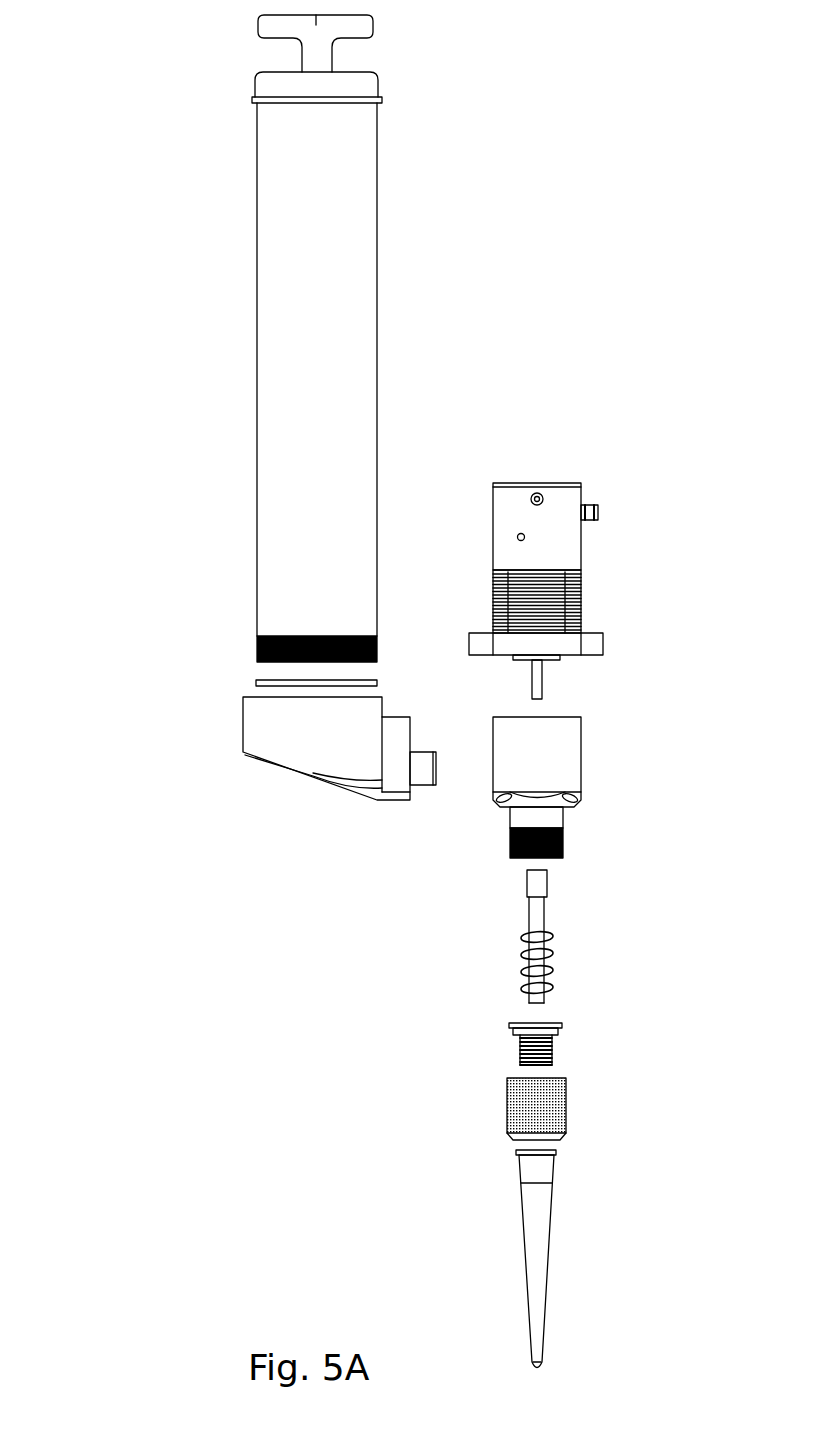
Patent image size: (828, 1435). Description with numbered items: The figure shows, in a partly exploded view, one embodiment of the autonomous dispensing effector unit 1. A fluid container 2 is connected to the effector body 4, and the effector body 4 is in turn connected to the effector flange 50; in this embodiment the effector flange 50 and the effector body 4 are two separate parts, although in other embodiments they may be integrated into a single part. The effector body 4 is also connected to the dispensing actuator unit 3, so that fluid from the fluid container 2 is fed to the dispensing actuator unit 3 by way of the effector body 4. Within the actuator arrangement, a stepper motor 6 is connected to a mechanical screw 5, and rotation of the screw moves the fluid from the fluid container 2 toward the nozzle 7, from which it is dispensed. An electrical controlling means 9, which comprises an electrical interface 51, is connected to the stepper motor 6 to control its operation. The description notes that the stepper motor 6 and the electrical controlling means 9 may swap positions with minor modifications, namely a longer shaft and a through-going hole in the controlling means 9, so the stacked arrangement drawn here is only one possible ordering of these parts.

The autonomous dispensing effector unit 1 is at (138, 166).
The fluid container 2 is at (366, 272).
The dispensing actuator unit 3 is at (568, 770).
The effector body 4 is at (298, 748).
The mechanical screw 5 is at (538, 922).
The stepper motor 6 is at (581, 615).
The nozzle 7 is at (540, 1247).
The electrical controlling means 9 is at (563, 543).
The effector flange 50 is at (592, 648).
The electrical interface 51 is at (598, 508).